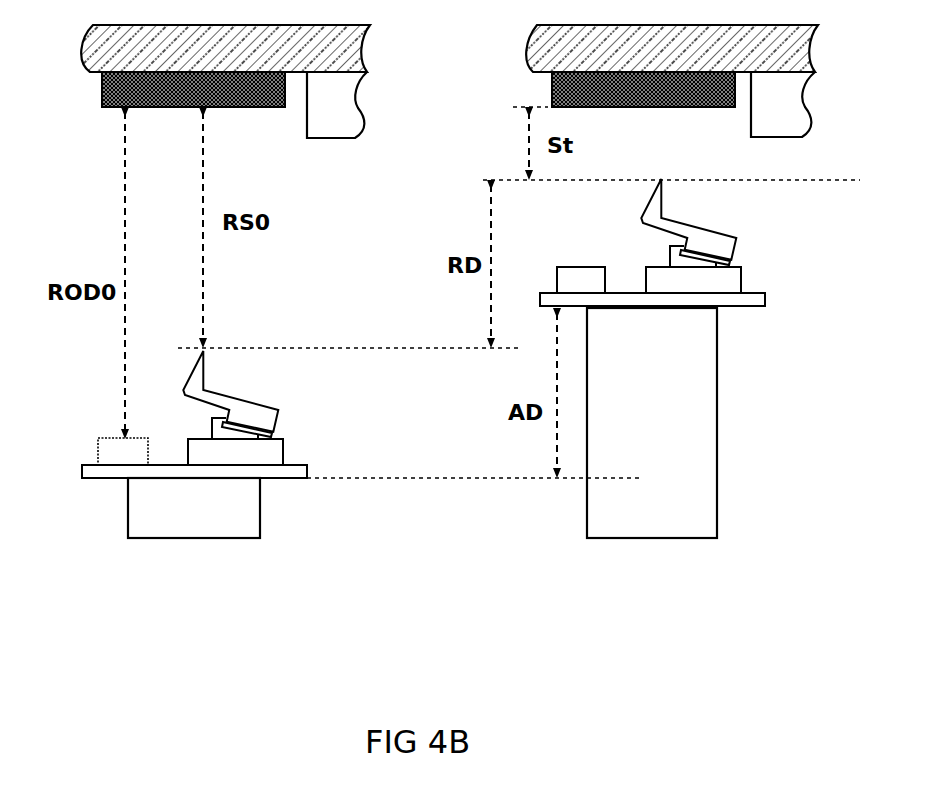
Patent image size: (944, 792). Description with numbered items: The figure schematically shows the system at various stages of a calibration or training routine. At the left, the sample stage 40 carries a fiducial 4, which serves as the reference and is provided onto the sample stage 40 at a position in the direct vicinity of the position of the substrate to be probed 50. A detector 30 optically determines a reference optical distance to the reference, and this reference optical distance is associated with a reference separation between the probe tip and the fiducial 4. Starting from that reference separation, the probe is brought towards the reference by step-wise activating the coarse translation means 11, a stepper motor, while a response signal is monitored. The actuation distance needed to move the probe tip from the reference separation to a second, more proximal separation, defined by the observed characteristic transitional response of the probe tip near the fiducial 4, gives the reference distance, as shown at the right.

The sample stage 40 is at (74, 53).
The fiducial 4 is at (80, 108).
The substrate to be probed 50 is at (561, 105).
The detector 30 is at (123, 452).
The coarse translation means 11 is at (422, 423).